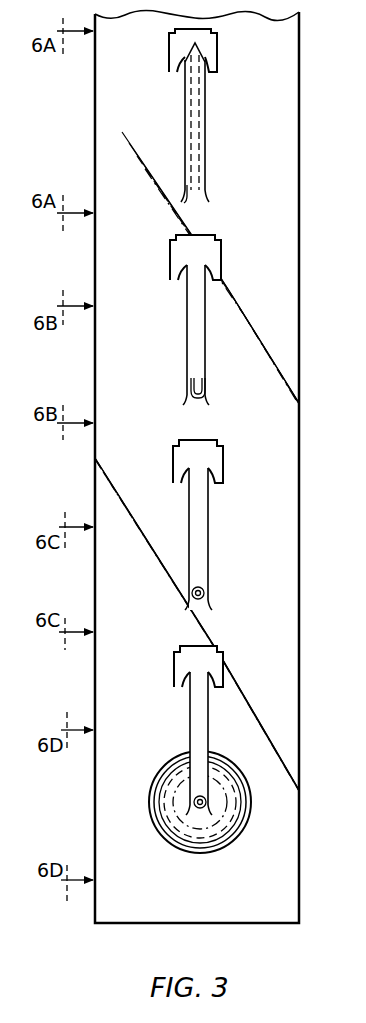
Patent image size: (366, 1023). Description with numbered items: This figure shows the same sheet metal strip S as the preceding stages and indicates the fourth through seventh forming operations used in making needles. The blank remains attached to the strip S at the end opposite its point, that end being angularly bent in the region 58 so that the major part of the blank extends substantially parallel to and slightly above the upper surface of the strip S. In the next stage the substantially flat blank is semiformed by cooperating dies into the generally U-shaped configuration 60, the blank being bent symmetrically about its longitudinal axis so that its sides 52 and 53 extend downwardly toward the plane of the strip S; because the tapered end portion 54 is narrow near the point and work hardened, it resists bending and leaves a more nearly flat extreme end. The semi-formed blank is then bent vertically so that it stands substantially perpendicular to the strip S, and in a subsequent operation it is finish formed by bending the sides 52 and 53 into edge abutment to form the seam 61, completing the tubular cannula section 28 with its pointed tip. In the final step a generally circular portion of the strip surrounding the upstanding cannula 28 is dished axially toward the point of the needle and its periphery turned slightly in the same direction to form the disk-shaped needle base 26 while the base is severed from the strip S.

The metal strip S is at (277, 642).
The needle base 26 is at (218, 782).
The tubular cannula section 28 is at (206, 593).
The side 52 is at (191, 382).
The side 53 is at (204, 382).
The tapered end portion 54 is at (197, 48).
The angularly bent region 58 is at (203, 193).
The generally U-shaped configuration 60 is at (207, 129).
The seam 61 is at (197, 800).